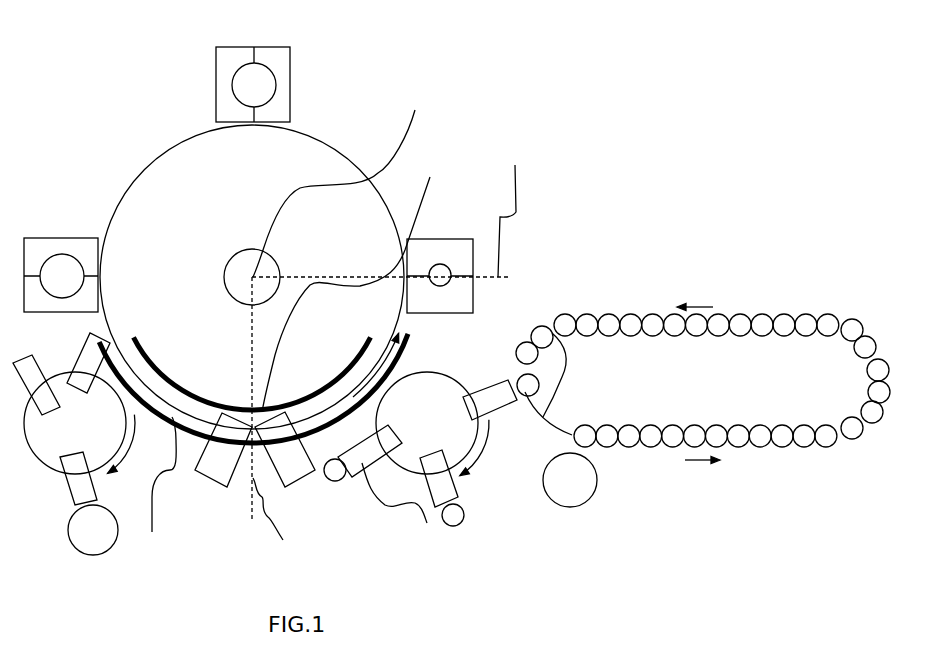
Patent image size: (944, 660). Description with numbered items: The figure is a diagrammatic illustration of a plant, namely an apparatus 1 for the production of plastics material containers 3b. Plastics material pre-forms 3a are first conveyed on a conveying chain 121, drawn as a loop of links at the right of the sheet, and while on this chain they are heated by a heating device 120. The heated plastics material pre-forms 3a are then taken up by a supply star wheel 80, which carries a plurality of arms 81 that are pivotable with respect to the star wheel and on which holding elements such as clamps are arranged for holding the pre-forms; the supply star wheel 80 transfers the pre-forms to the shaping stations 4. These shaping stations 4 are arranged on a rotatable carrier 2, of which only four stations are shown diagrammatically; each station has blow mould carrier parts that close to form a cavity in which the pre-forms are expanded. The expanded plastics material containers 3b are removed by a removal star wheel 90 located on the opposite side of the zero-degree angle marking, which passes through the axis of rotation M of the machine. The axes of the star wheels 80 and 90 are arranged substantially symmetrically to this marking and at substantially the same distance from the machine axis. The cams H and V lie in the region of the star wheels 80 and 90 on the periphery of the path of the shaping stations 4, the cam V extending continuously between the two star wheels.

The apparatus 1 is at (100, 68).
The rotatable carrier 2 is at (158, 213).
The plastics material pre-forms 3a is at (650, 438).
The plastics material containers 3b is at (108, 527).
The shaping stations 4 is at (213, 61).
The supply star wheel 80 is at (494, 504).
The arms 81 is at (427, 523).
The removal star wheel 90 is at (40, 525).
The heating device 120 is at (706, 266).
The conveying chain 121 is at (545, 327).